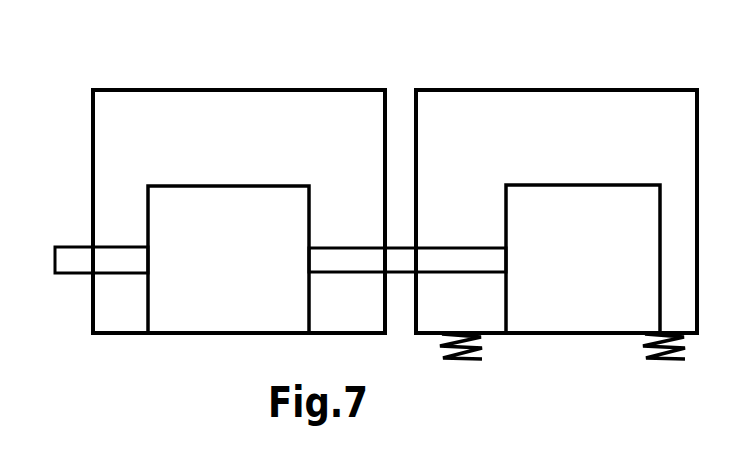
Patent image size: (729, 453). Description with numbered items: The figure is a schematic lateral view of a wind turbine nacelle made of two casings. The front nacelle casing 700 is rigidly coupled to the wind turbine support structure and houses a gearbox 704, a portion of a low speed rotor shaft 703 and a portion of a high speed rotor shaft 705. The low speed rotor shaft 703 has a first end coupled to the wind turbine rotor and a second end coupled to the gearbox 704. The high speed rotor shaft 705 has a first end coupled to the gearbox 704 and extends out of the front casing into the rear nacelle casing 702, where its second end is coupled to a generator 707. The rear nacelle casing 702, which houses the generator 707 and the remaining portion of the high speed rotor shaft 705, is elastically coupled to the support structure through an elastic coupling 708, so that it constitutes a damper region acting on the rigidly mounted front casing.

The front nacelle casing 700 is at (208, 113).
The rear nacelle casing 702 is at (522, 114).
The low speed rotor shaft 703 is at (72, 260).
The gearbox 704 is at (249, 214).
The high speed rotor shaft 705 is at (363, 260).
The generator 707 is at (600, 215).
The elastic coupling 708 is at (482, 347).